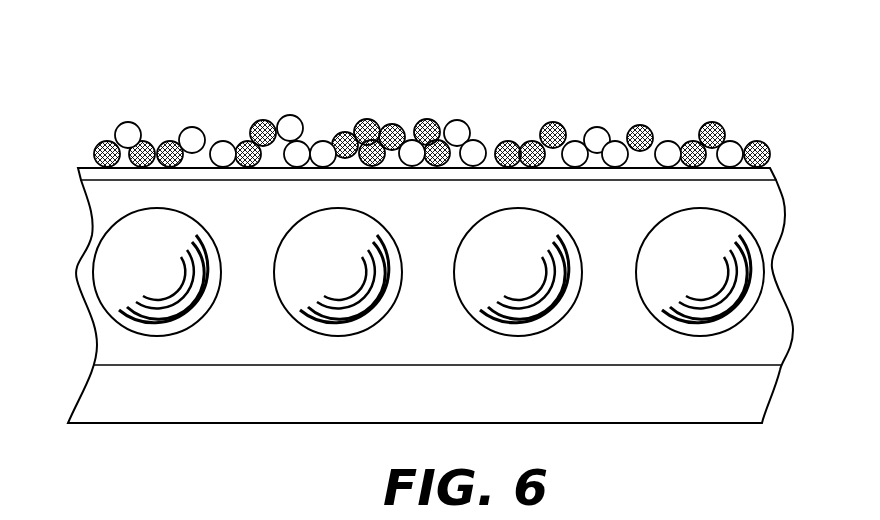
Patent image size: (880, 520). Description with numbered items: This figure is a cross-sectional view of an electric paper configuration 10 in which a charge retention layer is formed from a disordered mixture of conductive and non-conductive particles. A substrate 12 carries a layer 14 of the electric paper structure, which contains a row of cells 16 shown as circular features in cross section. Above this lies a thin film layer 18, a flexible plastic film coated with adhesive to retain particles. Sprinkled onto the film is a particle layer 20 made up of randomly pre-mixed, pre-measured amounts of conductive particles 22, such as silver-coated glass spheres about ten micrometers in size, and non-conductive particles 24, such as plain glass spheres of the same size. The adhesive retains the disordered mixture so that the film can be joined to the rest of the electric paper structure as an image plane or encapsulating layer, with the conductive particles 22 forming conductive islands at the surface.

The coated article 10 is at (676, 73).
The substrate 12 is at (85, 398).
The intermediate layer 14 is at (110, 347).
The dimples / cells 16 is at (117, 255).
The top layer 18 is at (80, 173).
The particle layer 20 is at (781, 115).
The hatched particles 22 is at (420, 122).
The unhatched particles 24 is at (460, 123).